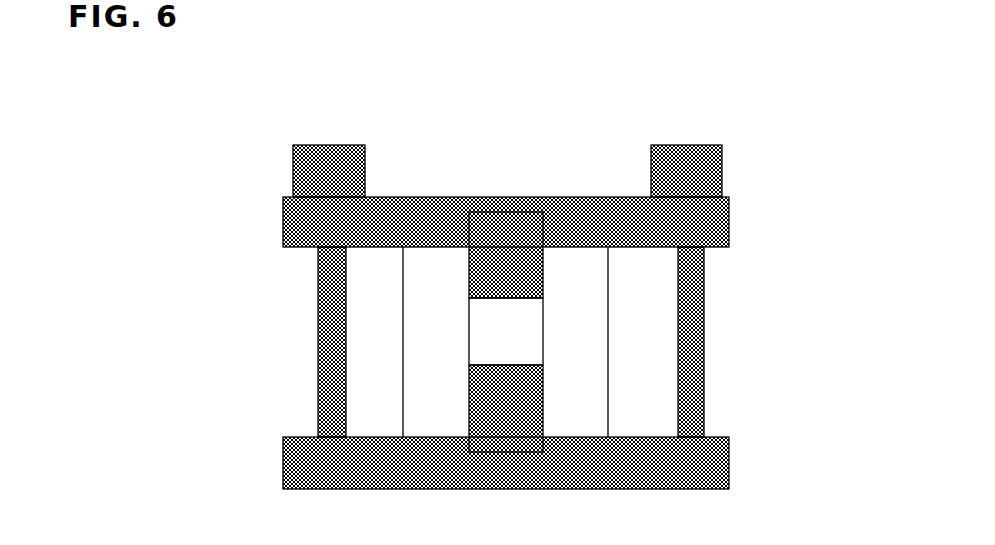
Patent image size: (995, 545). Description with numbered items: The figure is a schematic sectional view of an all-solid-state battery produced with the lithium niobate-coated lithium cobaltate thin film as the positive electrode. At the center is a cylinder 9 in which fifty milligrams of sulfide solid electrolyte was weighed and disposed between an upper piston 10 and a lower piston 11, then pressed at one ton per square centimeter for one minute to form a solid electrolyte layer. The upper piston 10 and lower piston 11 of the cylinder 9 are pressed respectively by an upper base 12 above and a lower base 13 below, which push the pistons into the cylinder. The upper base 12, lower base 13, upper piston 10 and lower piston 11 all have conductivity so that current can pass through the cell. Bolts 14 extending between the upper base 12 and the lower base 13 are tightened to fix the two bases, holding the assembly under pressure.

The cylinder 9 is at (469, 330).
The upper piston 10 is at (520, 278).
The lower piston 11 is at (520, 395).
The upper base 12 is at (713, 228).
The lower base 13 is at (706, 460).
The bolts 14 is at (303, 167).